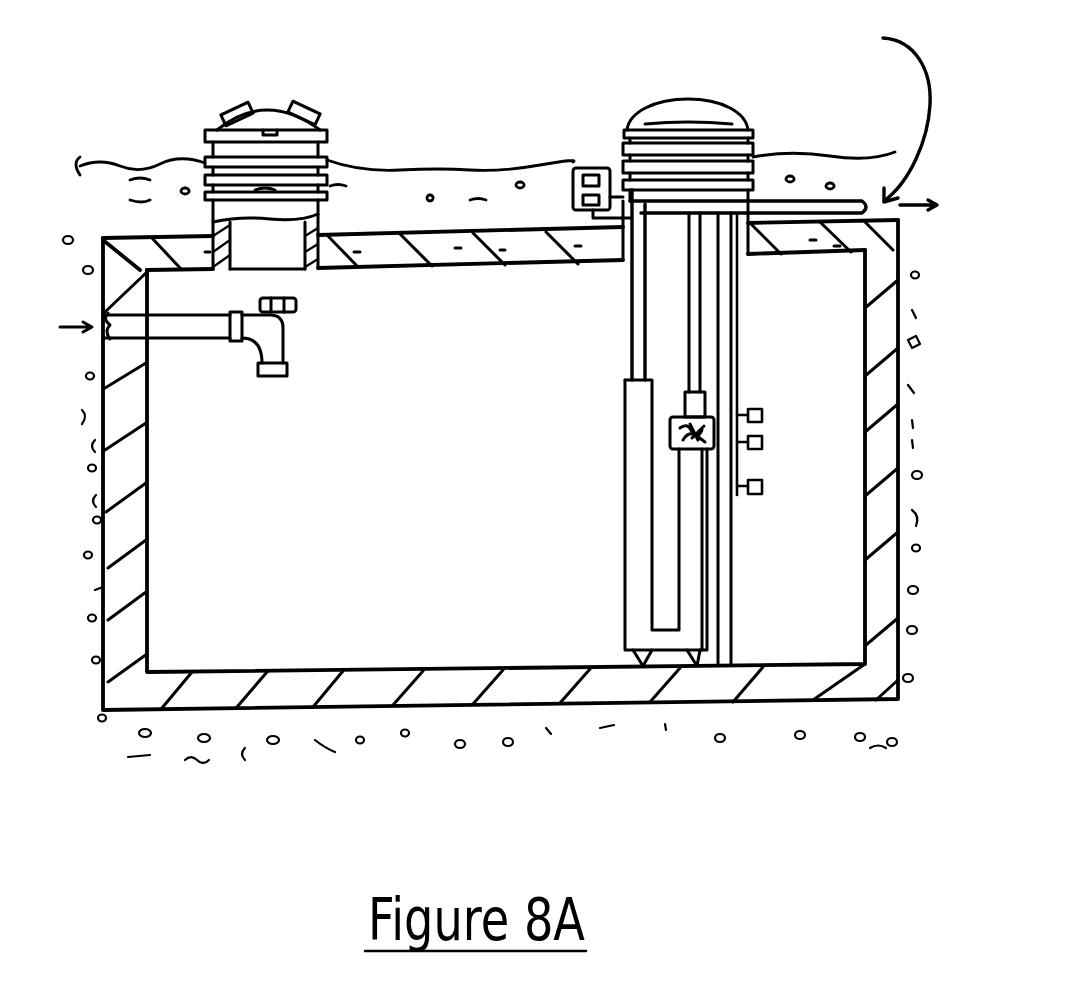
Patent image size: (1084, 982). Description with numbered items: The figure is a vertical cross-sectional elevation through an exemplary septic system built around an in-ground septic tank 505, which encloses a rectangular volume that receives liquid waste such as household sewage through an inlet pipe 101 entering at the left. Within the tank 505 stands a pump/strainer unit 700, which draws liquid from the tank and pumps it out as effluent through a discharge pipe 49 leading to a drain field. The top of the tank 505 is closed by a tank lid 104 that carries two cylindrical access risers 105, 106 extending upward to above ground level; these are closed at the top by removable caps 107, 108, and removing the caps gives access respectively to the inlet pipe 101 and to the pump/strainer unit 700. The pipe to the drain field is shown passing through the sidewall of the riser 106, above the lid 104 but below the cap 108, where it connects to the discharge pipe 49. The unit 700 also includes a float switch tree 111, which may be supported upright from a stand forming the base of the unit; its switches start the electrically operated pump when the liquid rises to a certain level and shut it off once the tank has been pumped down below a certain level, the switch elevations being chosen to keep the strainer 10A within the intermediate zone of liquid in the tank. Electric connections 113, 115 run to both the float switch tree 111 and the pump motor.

The septic tank 505 is at (343, 713).
The tank lid 104 is at (448, 250).
The access riser 105 is at (320, 206).
The cap 107 is at (267, 110).
The access riser 106 is at (752, 163).
The cap 108 is at (740, 113).
The discharge pipe 49 is at (848, 198).
The electric connection 115 is at (630, 302).
The electric connection 113 is at (732, 327).
The float switch tree 111 is at (732, 390).
The strainer 10A is at (670, 428).
The pump/strainer unit 700 is at (603, 534).
The inlet pipe 101 is at (207, 343).